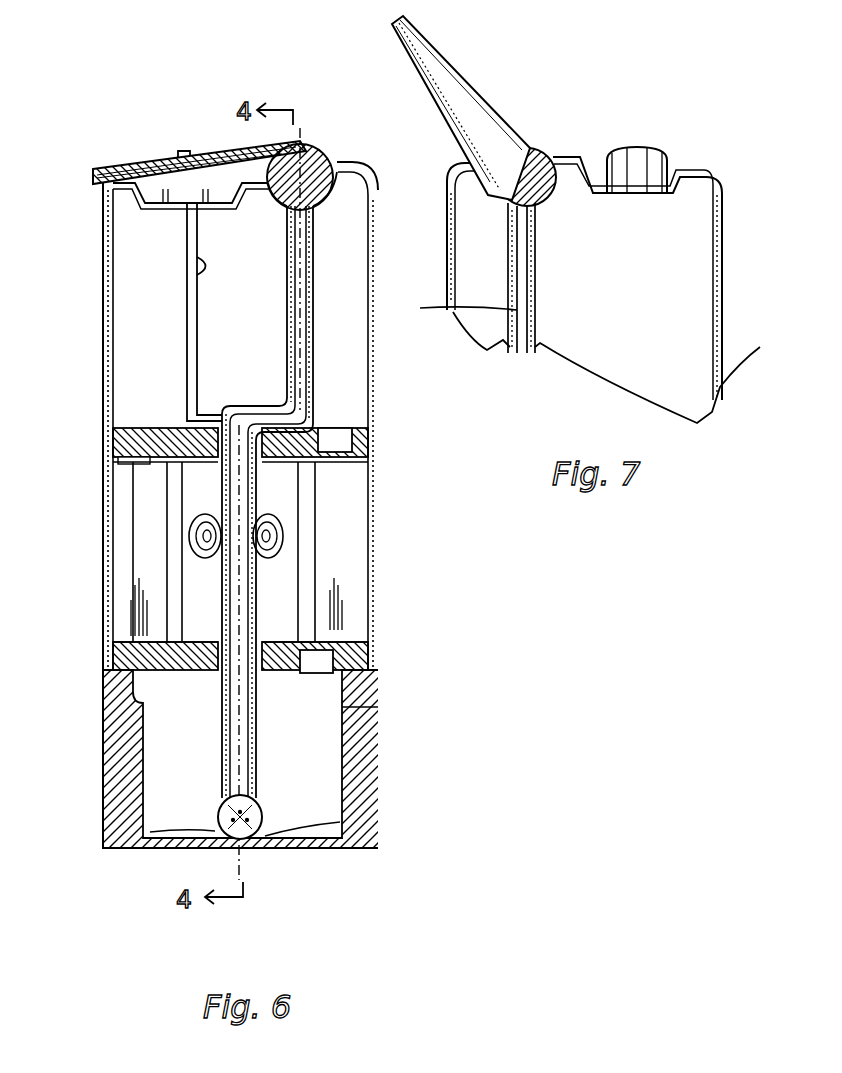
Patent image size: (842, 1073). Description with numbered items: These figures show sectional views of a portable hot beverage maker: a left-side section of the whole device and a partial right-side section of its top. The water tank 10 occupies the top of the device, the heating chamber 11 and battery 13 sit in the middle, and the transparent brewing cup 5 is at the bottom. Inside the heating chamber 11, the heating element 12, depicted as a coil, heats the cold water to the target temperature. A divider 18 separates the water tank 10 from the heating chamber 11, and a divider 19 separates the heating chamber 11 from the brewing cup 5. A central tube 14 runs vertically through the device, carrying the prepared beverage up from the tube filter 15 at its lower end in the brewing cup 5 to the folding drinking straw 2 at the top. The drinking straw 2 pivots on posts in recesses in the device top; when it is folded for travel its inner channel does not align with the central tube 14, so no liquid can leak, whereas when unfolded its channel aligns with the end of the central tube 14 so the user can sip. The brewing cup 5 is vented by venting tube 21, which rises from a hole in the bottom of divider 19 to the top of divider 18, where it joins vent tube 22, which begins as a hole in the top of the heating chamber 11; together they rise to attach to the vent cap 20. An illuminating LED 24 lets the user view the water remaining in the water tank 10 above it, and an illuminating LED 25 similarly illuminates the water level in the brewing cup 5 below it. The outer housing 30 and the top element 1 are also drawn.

In FIG. 7, the dispensing nozzle 1 is at (637, 163).
In FIG. 6, the drinking straw 2 is at (325, 160).
In FIG. 7, the drinking straw 2 is at (532, 148).
In FIG. 6, the brewing cup 5 is at (304, 752).
In FIG. 6, the water tank 10 is at (155, 369).
In FIG. 7, the water tank 10 is at (650, 275).
In FIG. 6, the heating chamber 11 is at (197, 590).
In FIG. 6, the heating element 12 is at (190, 533).
In FIG. 6, the battery 13 is at (337, 528).
In FIG. 6, the central tube 14 is at (306, 309).
In FIG. 7, the central tube 14 is at (440, 309).
In FIG. 6, the tube filter 15 is at (258, 823).
In FIG. 6, the divider 18 is at (112, 443).
In FIG. 6, the divider 19 is at (112, 649).
In FIG. 6, the vent cap 20 is at (183, 152).
In FIG. 6, the venting tube 21 is at (186, 315).
In FIG. 6, the vent tube 22 is at (200, 266).
In FIG. 6, the illuminating LED 24 is at (345, 446).
In FIG. 6, the illuminating LED 25 is at (340, 658).
In FIG. 6, the outer wall 30 is at (386, 211).